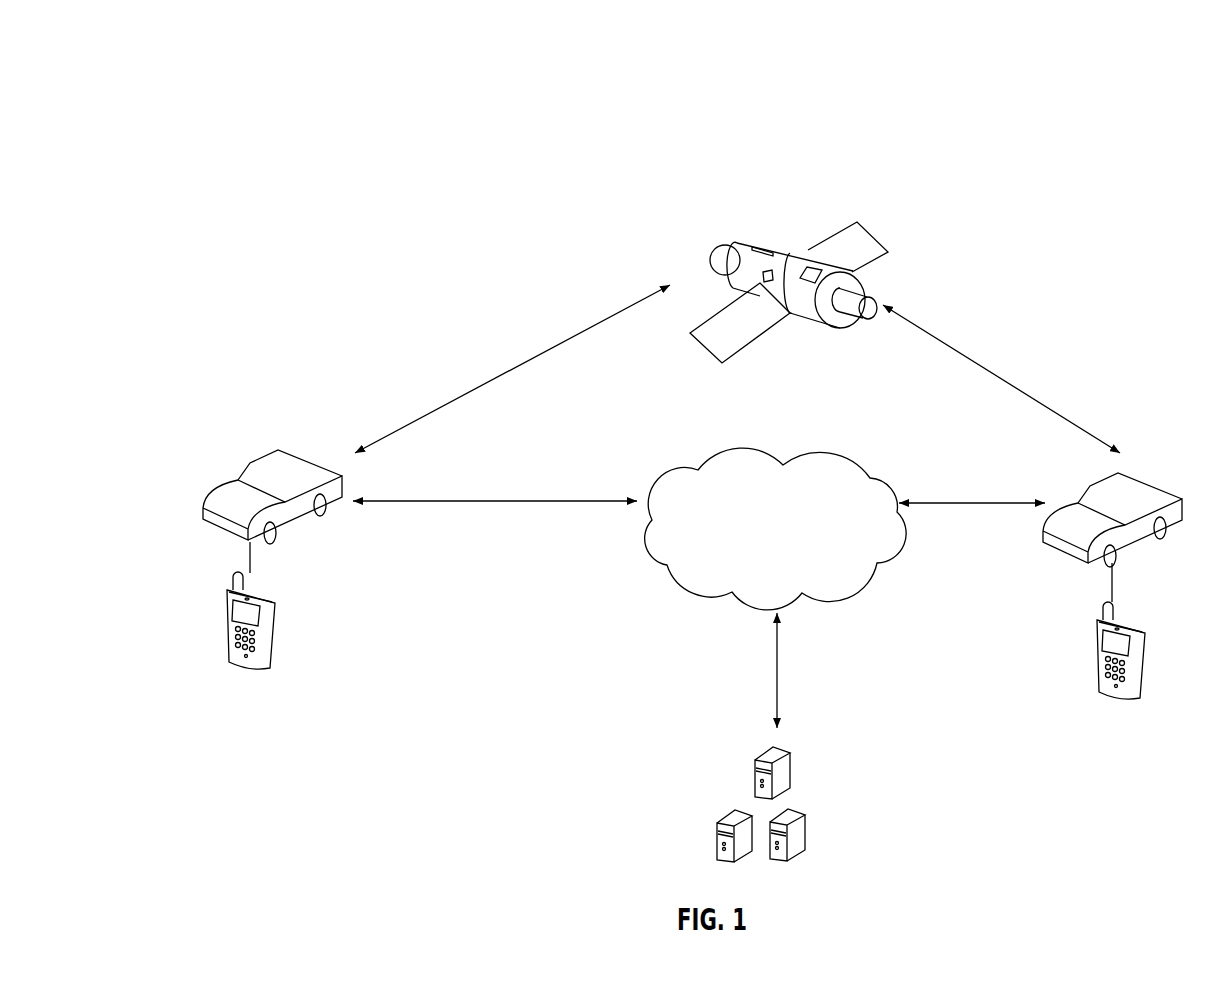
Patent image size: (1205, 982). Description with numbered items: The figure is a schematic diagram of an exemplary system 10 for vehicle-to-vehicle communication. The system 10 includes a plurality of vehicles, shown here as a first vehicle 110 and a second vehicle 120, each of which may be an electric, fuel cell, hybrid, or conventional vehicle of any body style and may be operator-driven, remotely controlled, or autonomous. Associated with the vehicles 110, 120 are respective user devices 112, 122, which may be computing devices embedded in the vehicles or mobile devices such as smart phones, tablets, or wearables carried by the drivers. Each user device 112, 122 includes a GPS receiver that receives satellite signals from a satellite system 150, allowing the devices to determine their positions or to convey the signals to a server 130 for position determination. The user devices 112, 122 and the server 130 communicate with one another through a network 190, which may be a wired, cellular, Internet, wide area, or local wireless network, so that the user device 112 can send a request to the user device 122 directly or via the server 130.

The system 10 is at (687, 68).
The first vehicle 110 is at (249, 521).
The user device 112 is at (273, 620).
The second vehicle 120 is at (1091, 540).
The user device 122 is at (1139, 650).
The server 130 is at (818, 803).
The satellite system 150 is at (808, 220).
The network 190 is at (789, 538).